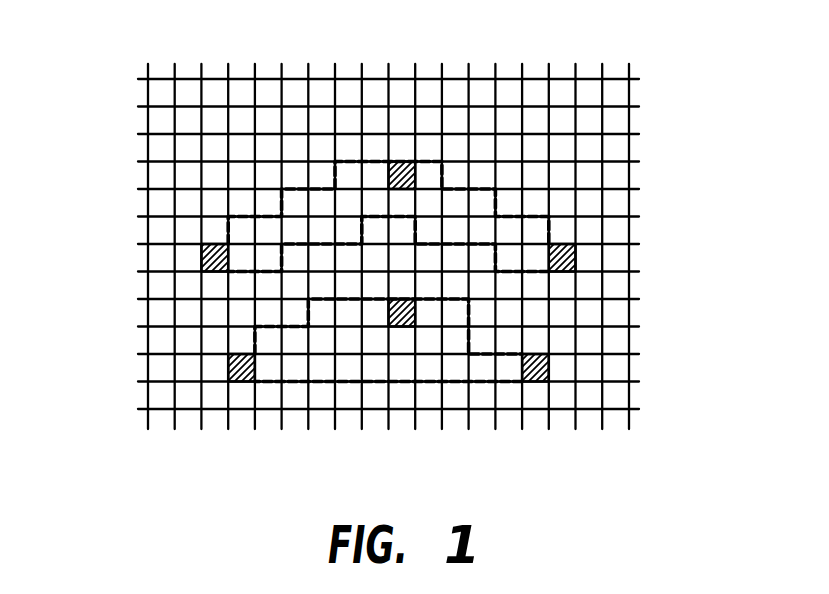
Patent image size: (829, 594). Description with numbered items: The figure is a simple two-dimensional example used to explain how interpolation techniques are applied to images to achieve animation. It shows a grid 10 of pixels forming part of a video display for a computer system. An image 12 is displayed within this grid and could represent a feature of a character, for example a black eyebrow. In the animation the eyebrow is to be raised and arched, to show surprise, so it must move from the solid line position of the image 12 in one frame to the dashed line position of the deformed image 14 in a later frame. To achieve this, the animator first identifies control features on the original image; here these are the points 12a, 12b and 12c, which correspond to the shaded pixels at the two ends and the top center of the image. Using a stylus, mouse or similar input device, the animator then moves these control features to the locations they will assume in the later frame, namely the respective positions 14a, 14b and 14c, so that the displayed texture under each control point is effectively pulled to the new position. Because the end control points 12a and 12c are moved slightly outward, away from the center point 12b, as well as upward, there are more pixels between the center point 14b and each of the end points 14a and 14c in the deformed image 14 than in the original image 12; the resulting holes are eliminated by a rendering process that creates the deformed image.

The grid 10 is at (616, 397).
The image 12 is at (294, 366).
The control point 12a is at (228, 368).
The control point 12b is at (402, 328).
The control point 12c is at (549, 368).
The deformed image 14 is at (548, 220).
The control point position 14a is at (202, 258).
The control point position 14b is at (403, 162).
The control point position 14c is at (577, 257).